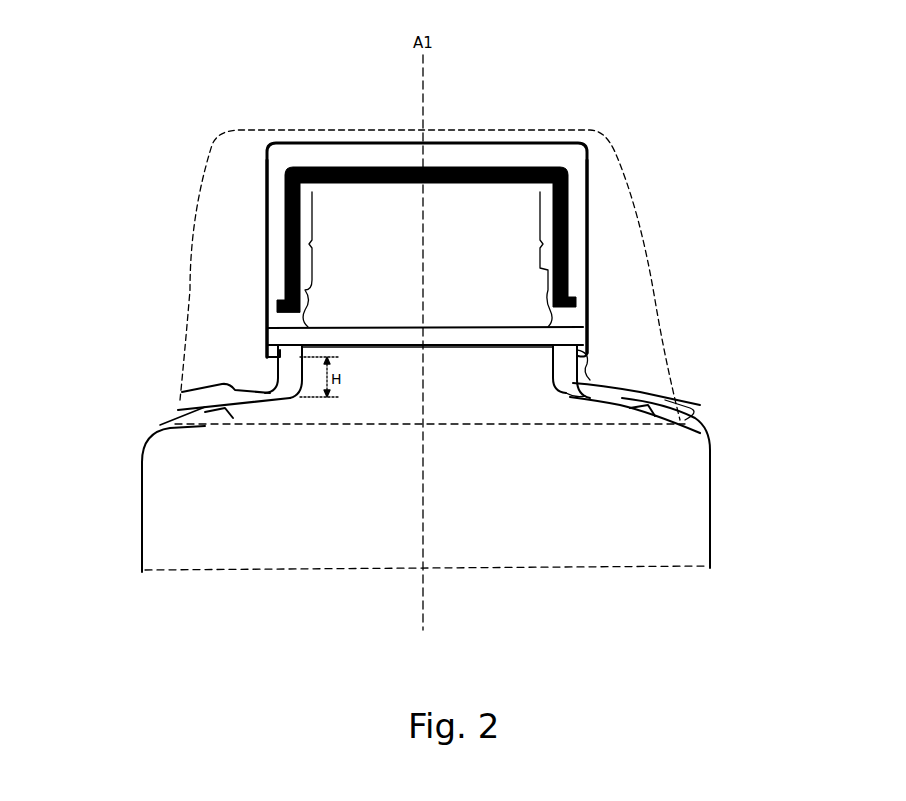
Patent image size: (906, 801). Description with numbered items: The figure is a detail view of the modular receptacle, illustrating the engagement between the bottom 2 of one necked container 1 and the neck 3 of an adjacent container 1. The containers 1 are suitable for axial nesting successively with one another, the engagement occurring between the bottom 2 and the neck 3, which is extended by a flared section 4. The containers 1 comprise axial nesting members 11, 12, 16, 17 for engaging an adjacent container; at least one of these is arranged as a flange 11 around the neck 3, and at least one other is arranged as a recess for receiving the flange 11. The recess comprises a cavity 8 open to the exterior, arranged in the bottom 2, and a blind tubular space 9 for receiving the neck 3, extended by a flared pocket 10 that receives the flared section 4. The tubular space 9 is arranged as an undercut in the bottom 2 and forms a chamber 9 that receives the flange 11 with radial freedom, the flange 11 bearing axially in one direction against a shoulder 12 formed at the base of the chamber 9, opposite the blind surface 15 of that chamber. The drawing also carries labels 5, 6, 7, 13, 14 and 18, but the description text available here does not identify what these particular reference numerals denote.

The necked container 1 is at (426, 350).
The bottom 2 is at (683, 243).
The neck 3 is at (390, 380).
The flared section 4 is at (565, 395).
The container 5 is at (142, 520).
The sealing insert 6 is at (305, 288).
The left skirt wall 7 is at (267, 193).
The cavity 8 is at (228, 277).
The blind tubular space 9 is at (590, 203).
The flared pocket 10 is at (645, 390).
The flange 11 is at (267, 324).
The shoulder 12 is at (565, 378).
The snap element 13 is at (590, 362).
The rim 14 is at (557, 375).
The blind surface 15 is at (487, 133).
The axial nesting member 16 is at (182, 393).
The axial nesting member 17 is at (215, 415).
The container edge 18 is at (180, 422).